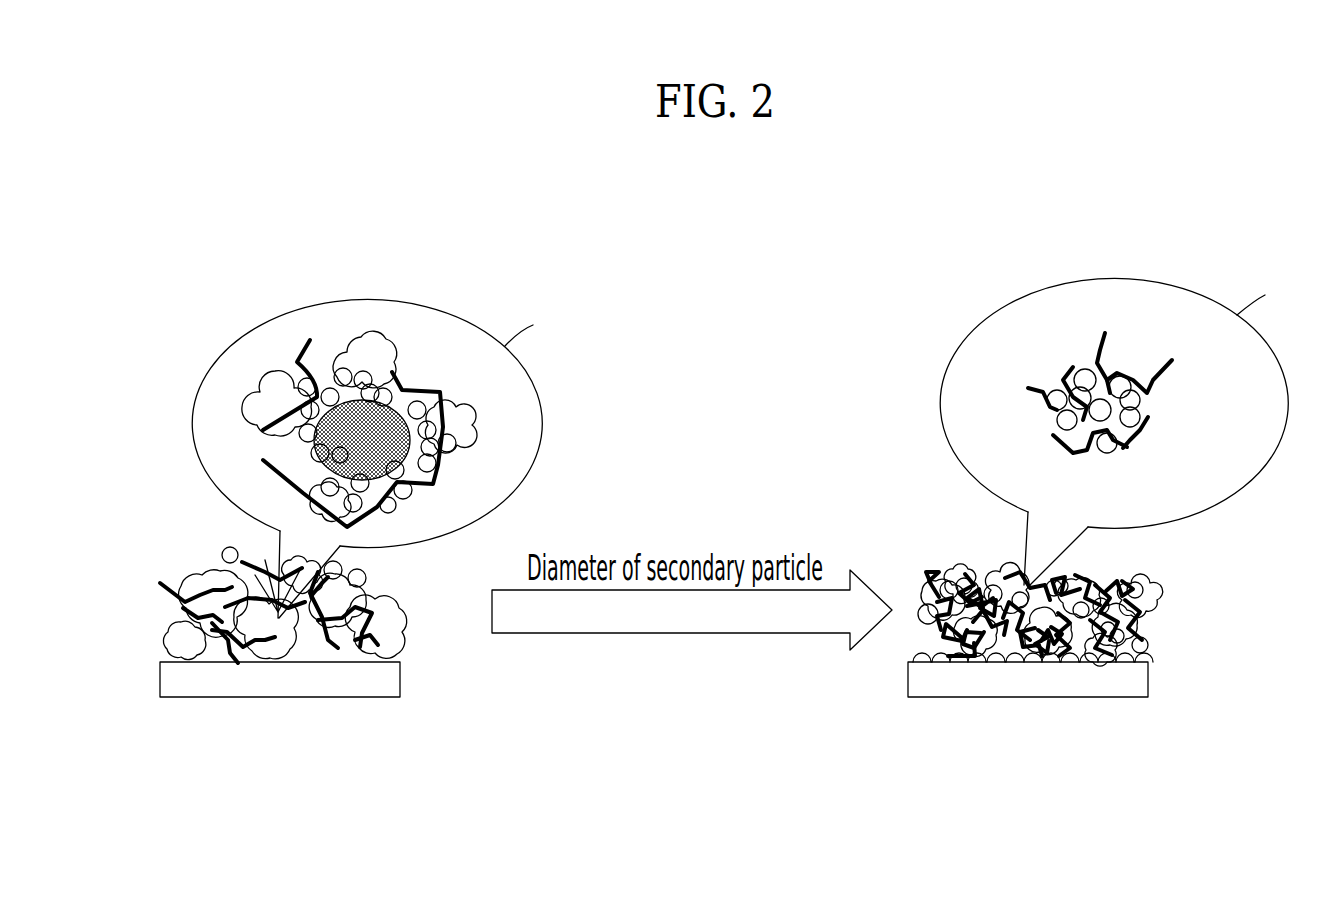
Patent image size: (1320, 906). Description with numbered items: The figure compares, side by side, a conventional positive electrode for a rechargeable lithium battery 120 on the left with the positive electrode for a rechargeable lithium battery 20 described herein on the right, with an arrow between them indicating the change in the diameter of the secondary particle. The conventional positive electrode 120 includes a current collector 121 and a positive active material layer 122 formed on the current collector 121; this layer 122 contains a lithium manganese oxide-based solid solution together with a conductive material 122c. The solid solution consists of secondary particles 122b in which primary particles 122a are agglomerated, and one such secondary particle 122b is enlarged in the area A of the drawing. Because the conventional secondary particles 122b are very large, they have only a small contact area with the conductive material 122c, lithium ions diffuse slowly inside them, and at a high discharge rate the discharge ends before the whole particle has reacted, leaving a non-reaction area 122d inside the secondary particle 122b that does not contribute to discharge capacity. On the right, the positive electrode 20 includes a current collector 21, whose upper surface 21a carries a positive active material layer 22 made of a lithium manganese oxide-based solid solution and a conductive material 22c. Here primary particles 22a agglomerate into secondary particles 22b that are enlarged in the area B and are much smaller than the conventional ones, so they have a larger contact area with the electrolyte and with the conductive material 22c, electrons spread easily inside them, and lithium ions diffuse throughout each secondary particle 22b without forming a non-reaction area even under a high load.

The conventional positive electrode for a rechargeable lithium battery 120 is at (223, 296).
The current collector 121 is at (345, 686).
The positive active material layer 122 is at (406, 596).
The primary particles 122a is at (407, 493).
The secondary particles 122b is at (407, 633).
The conductive material 122c is at (175, 578).
The non-reaction area 122d is at (400, 388).
The positive electrode for a rechargeable lithium battery 20 is at (978, 271).
The current collector 21 is at (1103, 686).
The current collector surface 21a is at (1147, 653).
The positive active material layer 22 is at (1185, 611).
The primary particles 22a is at (1117, 457).
The secondary particles 22b is at (1167, 440).
The conductive material 22c is at (1163, 373).